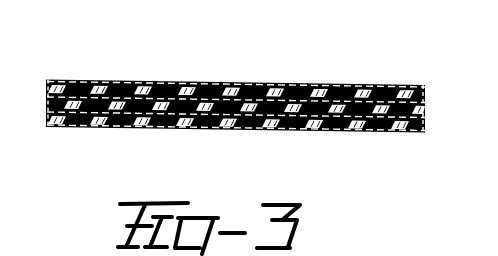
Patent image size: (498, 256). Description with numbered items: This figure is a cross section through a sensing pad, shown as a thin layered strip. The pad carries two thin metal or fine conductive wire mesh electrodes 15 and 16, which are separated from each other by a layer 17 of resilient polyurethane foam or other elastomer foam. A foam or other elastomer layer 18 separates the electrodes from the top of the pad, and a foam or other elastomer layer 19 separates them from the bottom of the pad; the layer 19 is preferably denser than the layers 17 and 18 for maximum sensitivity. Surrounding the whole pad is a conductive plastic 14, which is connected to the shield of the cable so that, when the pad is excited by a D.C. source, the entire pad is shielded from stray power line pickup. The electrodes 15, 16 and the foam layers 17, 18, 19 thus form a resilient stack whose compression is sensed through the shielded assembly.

The conductive plastic 14 is at (60, 80).
The electrode 15 is at (99, 81).
The electrode 16 is at (96, 128).
The layer of resilient polyurethane foam 17 is at (425, 106).
The foam or other elastomer layer 18 is at (402, 85).
The foam or other elastomer layer 19 is at (392, 133).